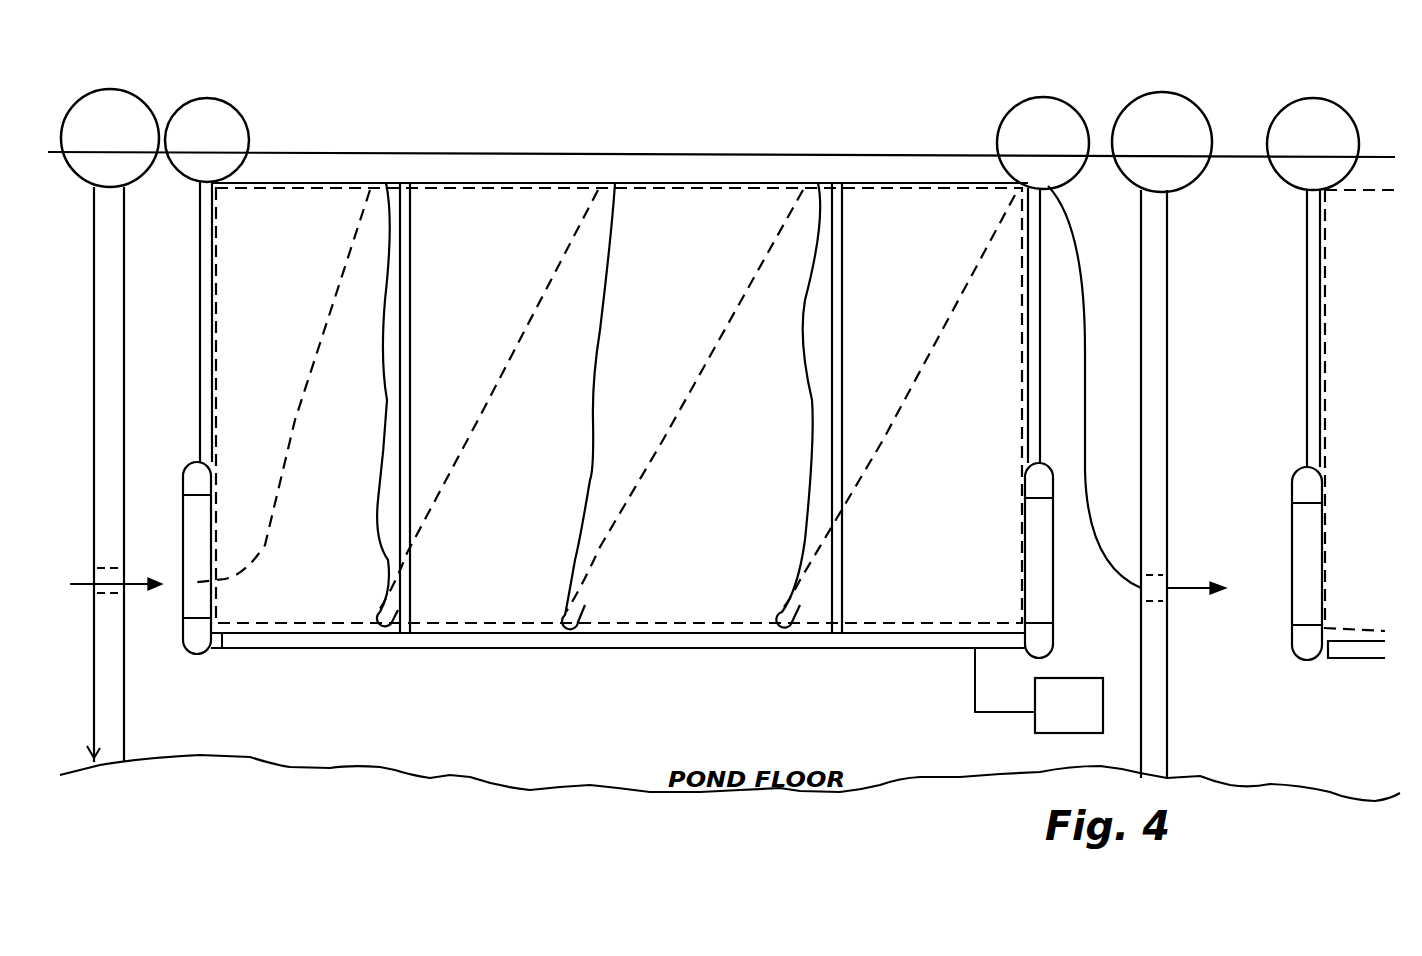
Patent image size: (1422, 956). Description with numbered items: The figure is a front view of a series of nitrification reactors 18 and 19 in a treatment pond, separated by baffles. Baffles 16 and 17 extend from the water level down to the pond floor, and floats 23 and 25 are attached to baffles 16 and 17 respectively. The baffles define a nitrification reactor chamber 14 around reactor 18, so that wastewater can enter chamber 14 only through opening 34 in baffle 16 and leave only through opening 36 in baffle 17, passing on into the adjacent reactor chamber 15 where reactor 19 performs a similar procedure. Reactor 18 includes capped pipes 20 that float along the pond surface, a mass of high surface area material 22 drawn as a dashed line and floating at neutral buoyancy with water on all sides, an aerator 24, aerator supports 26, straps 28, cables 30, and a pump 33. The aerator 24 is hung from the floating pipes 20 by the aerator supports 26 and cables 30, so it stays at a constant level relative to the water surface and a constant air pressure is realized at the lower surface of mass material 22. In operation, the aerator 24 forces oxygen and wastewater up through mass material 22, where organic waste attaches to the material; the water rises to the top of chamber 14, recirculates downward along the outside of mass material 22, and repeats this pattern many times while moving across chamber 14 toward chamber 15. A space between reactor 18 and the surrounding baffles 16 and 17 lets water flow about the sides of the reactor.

The nitrification reactor chamber 14 is at (657, 168).
The reactor chamber 15 is at (1222, 174).
The baffle 16 is at (128, 276).
The baffle 17 is at (1183, 252).
The nitrification reactor 18 is at (824, 178).
The nitrification reactor 19 is at (1282, 325).
The capped pipes 20 is at (197, 100).
The mass of high surface area material 22 is at (550, 624).
The float 23 is at (92, 88).
The aerator 24 is at (650, 650).
The float 25 is at (1150, 94).
The aerator supports 26 is at (183, 548).
The straps 28 is at (410, 345).
The cables 30 is at (200, 336).
The pump 33 is at (1088, 720).
The opening 34 is at (121, 586).
The opening 36 is at (1168, 578).